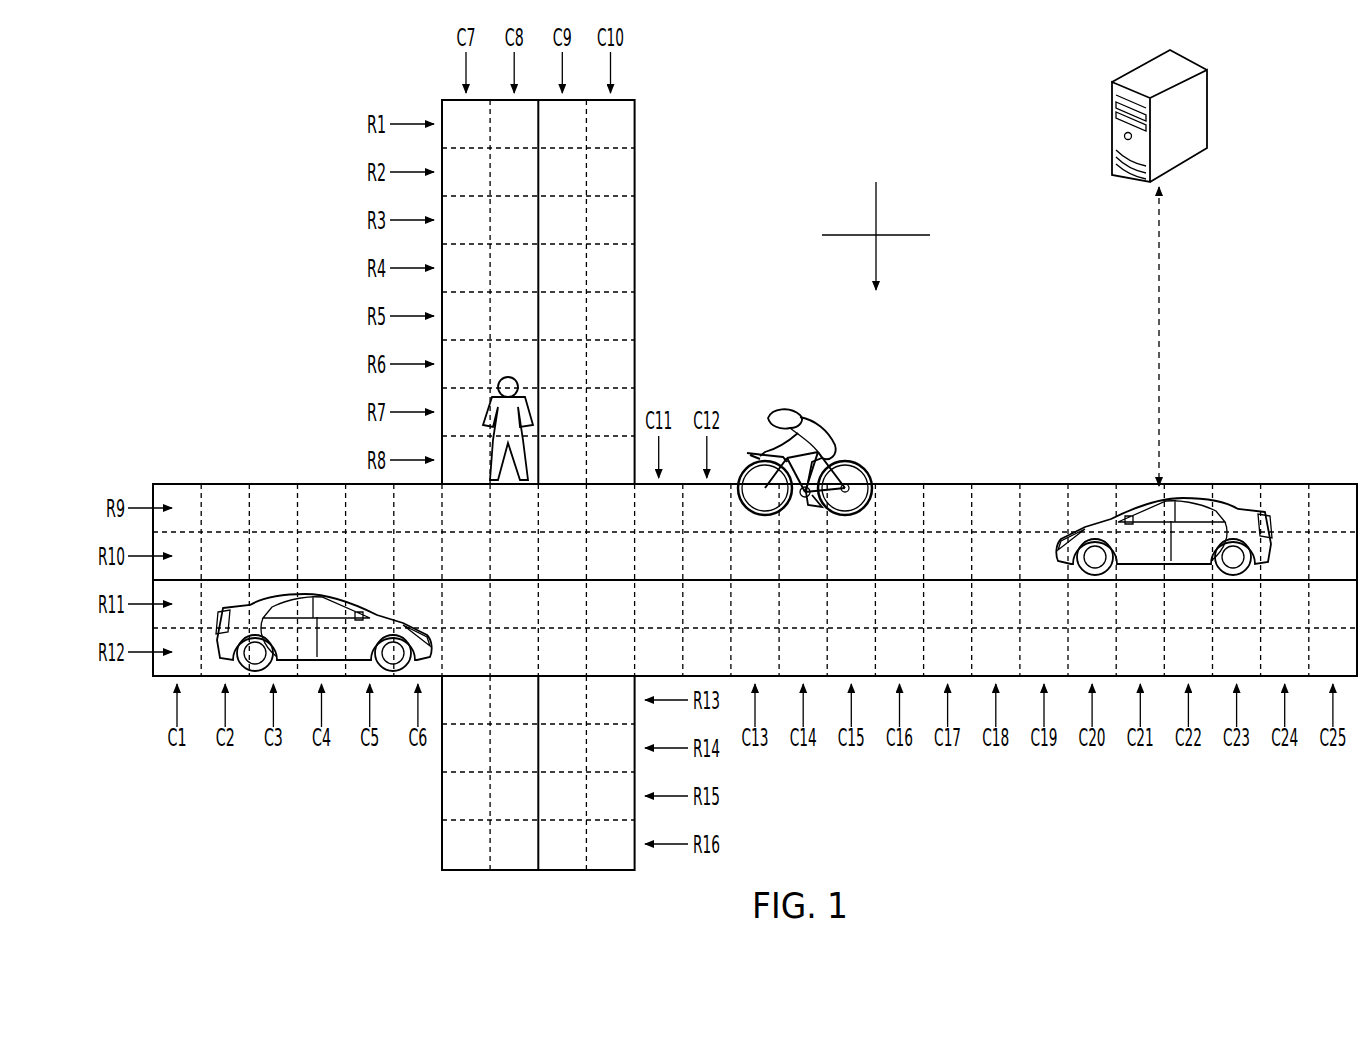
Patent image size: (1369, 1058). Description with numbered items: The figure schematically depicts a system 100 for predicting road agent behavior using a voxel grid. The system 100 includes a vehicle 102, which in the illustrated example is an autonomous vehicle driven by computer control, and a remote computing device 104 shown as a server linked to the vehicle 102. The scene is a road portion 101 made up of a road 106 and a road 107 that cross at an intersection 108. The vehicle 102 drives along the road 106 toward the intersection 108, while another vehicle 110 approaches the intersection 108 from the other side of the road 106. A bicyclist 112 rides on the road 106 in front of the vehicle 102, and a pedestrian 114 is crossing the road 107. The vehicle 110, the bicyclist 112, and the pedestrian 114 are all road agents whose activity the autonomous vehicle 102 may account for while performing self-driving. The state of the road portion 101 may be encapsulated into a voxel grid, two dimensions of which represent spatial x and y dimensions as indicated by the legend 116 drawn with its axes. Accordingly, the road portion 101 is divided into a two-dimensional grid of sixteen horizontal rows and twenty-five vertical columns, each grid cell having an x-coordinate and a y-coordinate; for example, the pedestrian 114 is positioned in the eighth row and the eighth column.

The system 100 is at (1296, 196).
The road portion 101 is at (255, 148).
The vehicle 102 is at (1225, 500).
The remote computing device 104 is at (1208, 103).
The road 106 is at (995, 502).
The road 107 is at (637, 318).
The intersection 108 is at (530, 636).
The vehicle 110 is at (285, 595).
The bicyclist 112 is at (808, 418).
The pedestrian 114 is at (519, 382).
The legend 116 is at (912, 190).